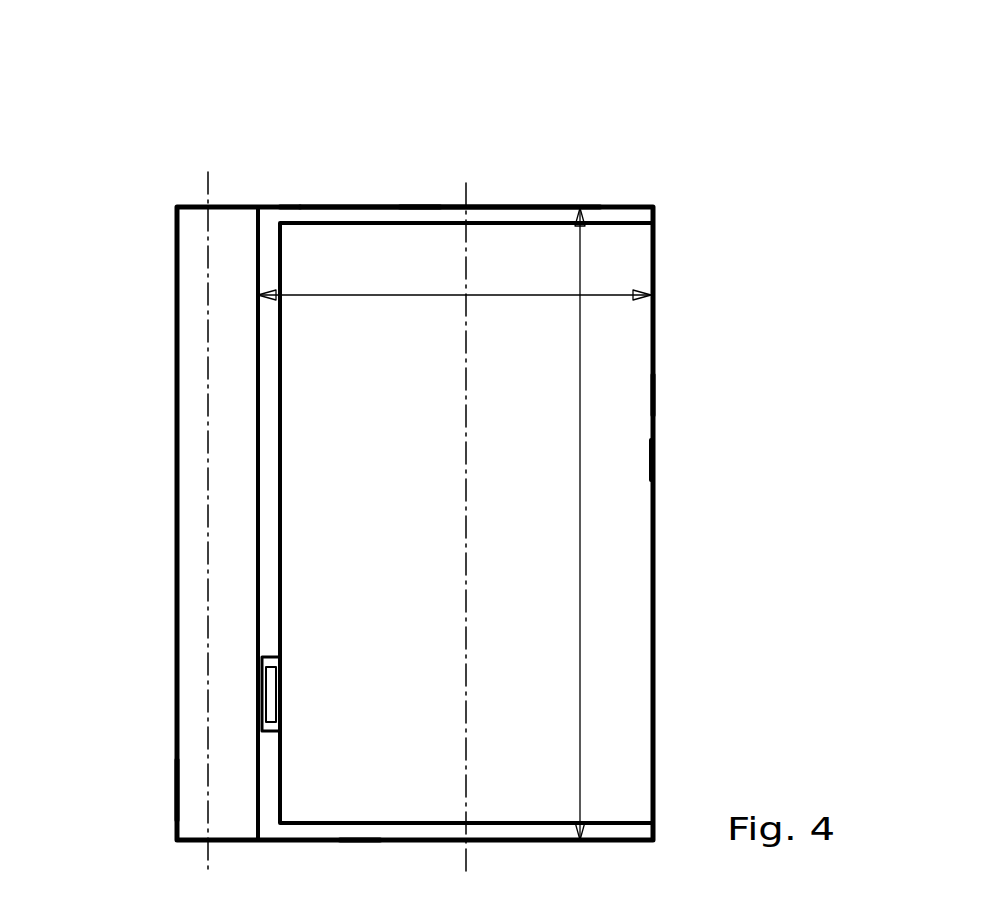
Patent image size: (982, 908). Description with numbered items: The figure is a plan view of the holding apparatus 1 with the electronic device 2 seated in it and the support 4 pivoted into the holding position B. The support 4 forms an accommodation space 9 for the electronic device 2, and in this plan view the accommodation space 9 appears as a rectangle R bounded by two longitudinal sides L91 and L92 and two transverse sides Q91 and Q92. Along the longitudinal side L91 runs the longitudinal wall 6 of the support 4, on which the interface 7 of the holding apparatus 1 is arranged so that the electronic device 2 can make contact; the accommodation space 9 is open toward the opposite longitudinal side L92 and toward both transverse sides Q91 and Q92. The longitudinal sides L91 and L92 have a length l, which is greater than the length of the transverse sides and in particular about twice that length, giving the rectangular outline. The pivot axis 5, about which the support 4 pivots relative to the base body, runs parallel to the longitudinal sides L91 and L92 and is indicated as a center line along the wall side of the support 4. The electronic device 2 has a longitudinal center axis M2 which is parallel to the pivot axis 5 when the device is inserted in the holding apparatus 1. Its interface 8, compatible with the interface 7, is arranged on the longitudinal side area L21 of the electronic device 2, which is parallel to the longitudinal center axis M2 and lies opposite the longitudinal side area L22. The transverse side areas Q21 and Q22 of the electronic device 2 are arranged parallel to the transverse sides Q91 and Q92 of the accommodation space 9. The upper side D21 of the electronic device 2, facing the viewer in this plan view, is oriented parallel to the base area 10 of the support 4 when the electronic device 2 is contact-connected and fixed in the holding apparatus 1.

The holding apparatus 1 is at (668, 162).
The electronic device 2 is at (620, 590).
The support 4 is at (192, 782).
The pivot axis 5 is at (205, 855).
The longitudinal wall 6 is at (190, 250).
The interface 7 is at (258, 693).
The interface 8 is at (272, 657).
The accommodation space 9 is at (347, 216).
The base area 10 is at (298, 213).
The rectangle R is at (655, 263).
The length l is at (583, 355).
The holding position B is at (712, 350).
The longitudinal center axis M2 is at (467, 698).
The transverse side Q91 is at (420, 207).
The transverse side area Q21 is at (522, 222).
The transverse side Q92 is at (358, 843).
The transverse side area Q22 is at (522, 828).
The longitudinal side L91 is at (258, 380).
The longitudinal side area L21 is at (280, 478).
The longitudinal side L92 is at (655, 395).
The longitudinal side area L22 is at (655, 458).
The upper side D21 is at (620, 525).